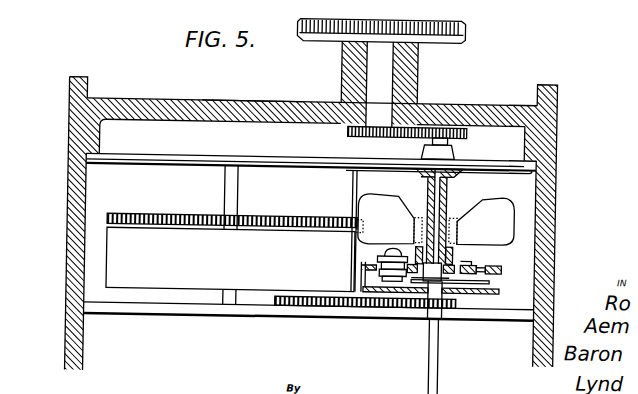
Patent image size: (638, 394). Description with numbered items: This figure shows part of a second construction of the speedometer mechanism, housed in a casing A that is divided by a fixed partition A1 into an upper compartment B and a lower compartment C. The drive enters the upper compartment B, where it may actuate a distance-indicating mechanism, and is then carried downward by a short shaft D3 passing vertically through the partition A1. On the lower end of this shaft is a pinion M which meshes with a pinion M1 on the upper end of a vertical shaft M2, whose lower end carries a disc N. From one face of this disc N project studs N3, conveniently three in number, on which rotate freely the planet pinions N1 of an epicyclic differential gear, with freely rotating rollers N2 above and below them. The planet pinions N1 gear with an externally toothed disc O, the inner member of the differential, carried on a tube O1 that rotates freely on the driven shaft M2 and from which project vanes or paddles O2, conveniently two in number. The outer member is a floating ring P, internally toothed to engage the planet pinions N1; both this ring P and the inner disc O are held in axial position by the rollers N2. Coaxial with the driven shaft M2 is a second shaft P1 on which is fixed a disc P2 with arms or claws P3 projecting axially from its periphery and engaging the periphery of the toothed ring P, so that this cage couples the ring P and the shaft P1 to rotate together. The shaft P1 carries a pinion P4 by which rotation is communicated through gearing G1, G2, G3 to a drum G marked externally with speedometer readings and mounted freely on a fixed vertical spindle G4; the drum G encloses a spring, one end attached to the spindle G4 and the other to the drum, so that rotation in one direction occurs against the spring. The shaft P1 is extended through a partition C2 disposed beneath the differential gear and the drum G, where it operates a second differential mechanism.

The casing A is at (79, 179).
The fixed partition A1 is at (245, 109).
The upper compartment B is at (160, 100).
The lower compartment C is at (116, 142).
The partition C2 is at (499, 319).
The short shaft D3 is at (377, 61).
The pinion M is at (333, 100).
The pinion M1 is at (451, 126).
The vertical shaft M2 is at (436, 176).
The externally toothed disc O is at (433, 288).
The tube O1 is at (457, 243).
The vanes or paddles O2 is at (574, 196).
The drum G is at (120, 252).
The gearing G1 is at (281, 309).
The gearing G2 is at (368, 216).
The gearing G3 is at (110, 221).
The fixed vertical spindle G4 is at (231, 304).
The disc N is at (501, 289).
The planet pinions N1 is at (401, 282).
The rollers N2 is at (578, 276).
The studs N3 is at (578, 254).
The floating ring P is at (366, 294).
The shaft P1 is at (444, 358).
The disc P2 is at (498, 293).
The arms or claws P3 is at (369, 277).
The pinion P4 is at (453, 303).